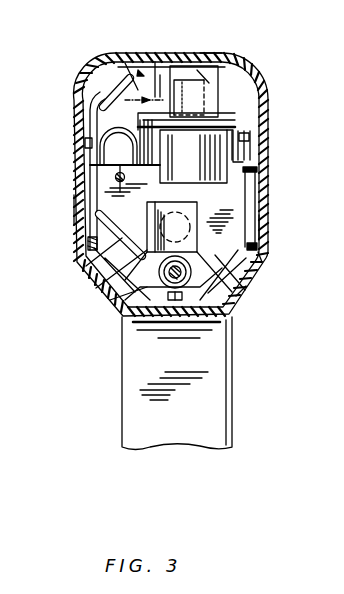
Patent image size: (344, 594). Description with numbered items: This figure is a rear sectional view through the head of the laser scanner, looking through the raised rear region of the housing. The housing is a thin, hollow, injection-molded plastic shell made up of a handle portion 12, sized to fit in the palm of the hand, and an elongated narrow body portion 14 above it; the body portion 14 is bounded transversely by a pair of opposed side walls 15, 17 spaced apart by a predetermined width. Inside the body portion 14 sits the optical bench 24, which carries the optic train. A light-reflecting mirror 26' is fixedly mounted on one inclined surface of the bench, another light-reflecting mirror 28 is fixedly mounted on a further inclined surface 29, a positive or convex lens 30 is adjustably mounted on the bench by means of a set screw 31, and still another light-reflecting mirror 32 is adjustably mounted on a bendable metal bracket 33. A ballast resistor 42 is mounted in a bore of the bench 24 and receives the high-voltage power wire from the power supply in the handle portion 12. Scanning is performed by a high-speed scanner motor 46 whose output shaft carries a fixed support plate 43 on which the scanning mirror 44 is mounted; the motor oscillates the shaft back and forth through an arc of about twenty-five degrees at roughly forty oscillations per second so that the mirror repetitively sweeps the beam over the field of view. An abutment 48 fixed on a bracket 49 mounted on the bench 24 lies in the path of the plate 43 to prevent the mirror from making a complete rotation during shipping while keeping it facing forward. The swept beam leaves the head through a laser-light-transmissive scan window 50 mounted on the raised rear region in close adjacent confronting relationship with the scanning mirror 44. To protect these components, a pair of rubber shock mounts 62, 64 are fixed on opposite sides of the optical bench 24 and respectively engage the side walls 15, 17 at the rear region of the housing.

The handle portion 12 is at (237, 408).
The body portion 14 is at (274, 180).
The side wall 15 is at (73, 207).
The side wall 17 is at (270, 228).
The optical bench 24 is at (223, 260).
The light-reflecting mirror 26' is at (262, 304).
The light-reflecting mirror 28 is at (78, 273).
The inclined surface 29 is at (97, 283).
The positive lens 30 is at (100, 153).
The set screw 31 is at (118, 174).
The light-reflecting mirror 32 is at (100, 100).
The bendable metal bracket 33 is at (101, 90).
The ballast resistor 42 is at (110, 308).
The support plate 43 is at (185, 82).
The scanning mirror 44 is at (225, 48).
The scanner motor 46 is at (232, 128).
The abutment 48 is at (159, 66).
The bracket 49 is at (143, 117).
The scan window 50 is at (115, 60).
The rubber shock mount 62 is at (82, 232).
The rubber shock mount 64 is at (256, 263).